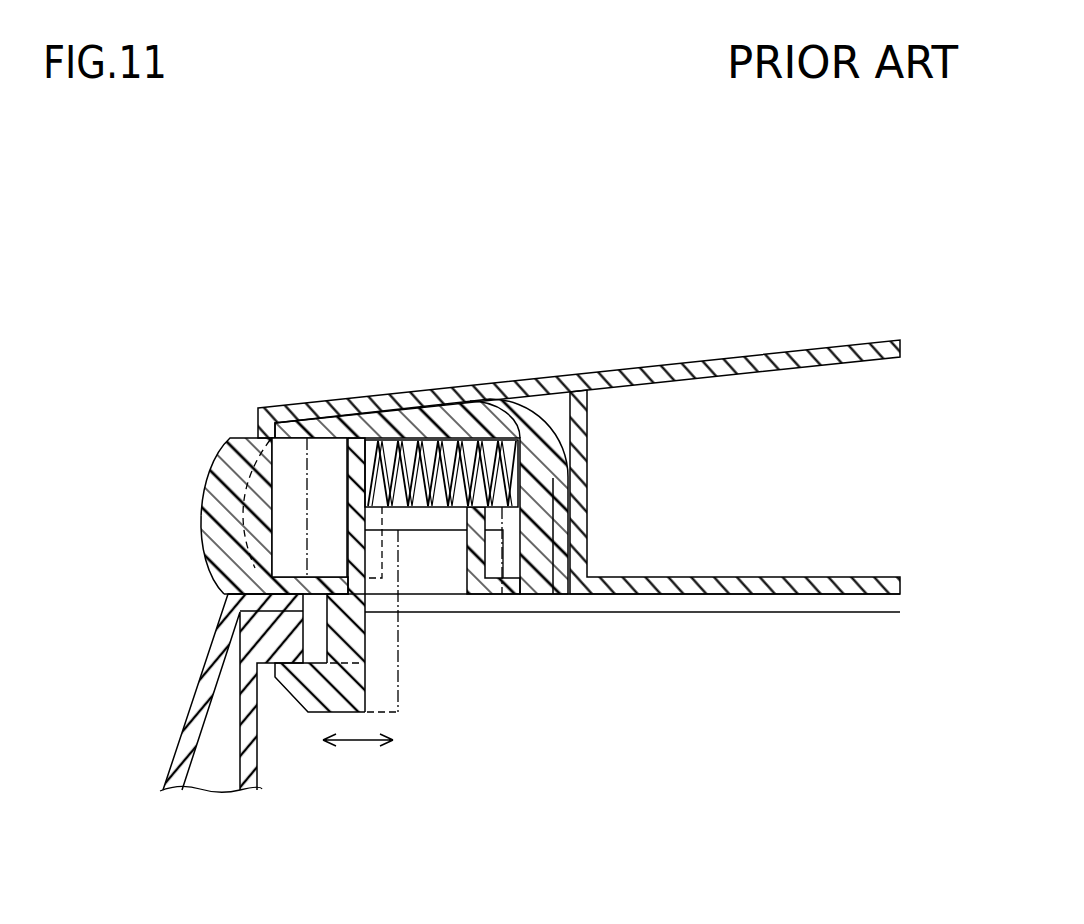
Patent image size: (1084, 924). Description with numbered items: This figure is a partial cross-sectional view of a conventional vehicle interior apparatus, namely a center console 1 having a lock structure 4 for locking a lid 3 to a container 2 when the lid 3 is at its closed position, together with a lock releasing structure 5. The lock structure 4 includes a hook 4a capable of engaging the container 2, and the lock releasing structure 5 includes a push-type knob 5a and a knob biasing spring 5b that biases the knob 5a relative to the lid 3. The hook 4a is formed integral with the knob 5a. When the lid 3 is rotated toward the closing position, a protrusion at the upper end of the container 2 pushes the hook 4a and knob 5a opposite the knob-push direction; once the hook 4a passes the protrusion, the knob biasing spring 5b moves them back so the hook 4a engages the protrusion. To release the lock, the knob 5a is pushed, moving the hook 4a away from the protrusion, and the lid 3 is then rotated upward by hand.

The center console 1 is at (358, 324).
The container 2 is at (185, 750).
The lid 3 is at (779, 353).
The lock structure 4 is at (364, 667).
The hook 4a is at (358, 690).
The lock releasing structure 5 is at (219, 486).
The knob 5a is at (232, 558).
The knob biasing spring 5b is at (467, 500).